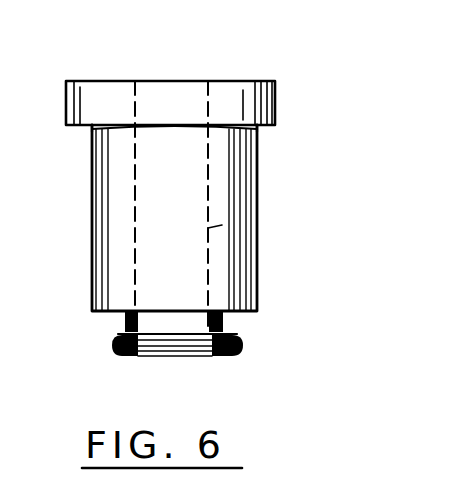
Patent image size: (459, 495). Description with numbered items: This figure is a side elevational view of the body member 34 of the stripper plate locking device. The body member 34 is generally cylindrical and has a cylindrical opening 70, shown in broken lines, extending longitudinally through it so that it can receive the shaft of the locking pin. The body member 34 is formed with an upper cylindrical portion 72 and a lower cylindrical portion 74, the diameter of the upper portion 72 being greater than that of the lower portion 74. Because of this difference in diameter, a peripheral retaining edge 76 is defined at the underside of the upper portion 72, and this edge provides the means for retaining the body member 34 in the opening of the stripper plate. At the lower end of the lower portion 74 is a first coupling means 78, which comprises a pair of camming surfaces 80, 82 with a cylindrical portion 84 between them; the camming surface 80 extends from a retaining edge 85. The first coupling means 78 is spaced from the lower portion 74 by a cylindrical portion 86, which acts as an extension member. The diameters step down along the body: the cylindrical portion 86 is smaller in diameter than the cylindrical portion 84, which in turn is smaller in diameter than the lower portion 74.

The body member 34 is at (221, 68).
The cylindrical opening 70 is at (208, 228).
The upper cylindrical portion 72 is at (276, 83).
The lower cylindrical portion 74 is at (92, 200).
The peripheral retaining edge 76 is at (270, 130).
The first coupling means 78 is at (244, 349).
The camming surface 80 is at (118, 336).
The camming surface 82 is at (163, 352).
The cylindrical portion 84 is at (115, 350).
The retaining edge 85 is at (240, 333).
The cylindrical portion 86 is at (125, 325).